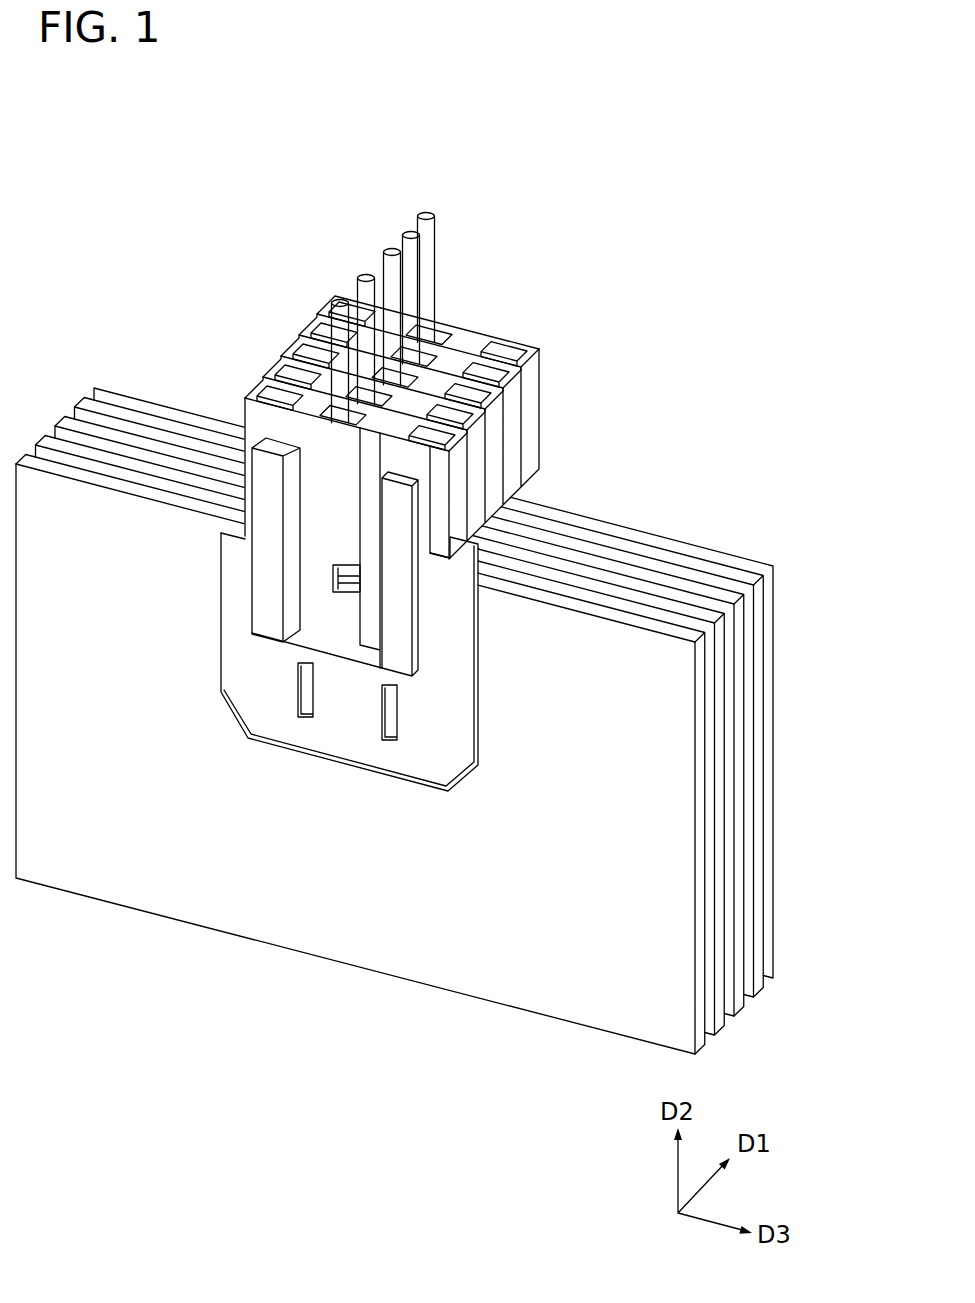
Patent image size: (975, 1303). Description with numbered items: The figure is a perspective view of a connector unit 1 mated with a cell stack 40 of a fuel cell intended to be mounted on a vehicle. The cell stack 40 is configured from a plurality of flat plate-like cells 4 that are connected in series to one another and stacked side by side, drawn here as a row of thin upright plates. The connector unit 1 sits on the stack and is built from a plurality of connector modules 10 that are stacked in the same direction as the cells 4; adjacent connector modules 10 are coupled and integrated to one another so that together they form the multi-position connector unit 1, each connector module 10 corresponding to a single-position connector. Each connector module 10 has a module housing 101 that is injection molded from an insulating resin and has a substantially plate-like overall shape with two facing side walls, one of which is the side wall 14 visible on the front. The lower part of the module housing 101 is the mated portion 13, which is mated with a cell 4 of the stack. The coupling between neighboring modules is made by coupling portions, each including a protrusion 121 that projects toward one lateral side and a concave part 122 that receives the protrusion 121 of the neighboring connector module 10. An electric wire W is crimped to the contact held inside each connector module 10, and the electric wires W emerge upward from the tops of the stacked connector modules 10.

The connector unit 1 is at (382, 502).
The cell 4 is at (772, 737).
The connector module 10 is at (296, 352).
The mated portion 13 is at (480, 735).
The side wall 14 is at (338, 522).
The cell stack 40 is at (423, 721).
The module housing 101 is at (221, 698).
The protrusion 121 is at (252, 580).
The concave part 122 is at (312, 422).
The electric wire W is at (340, 299).